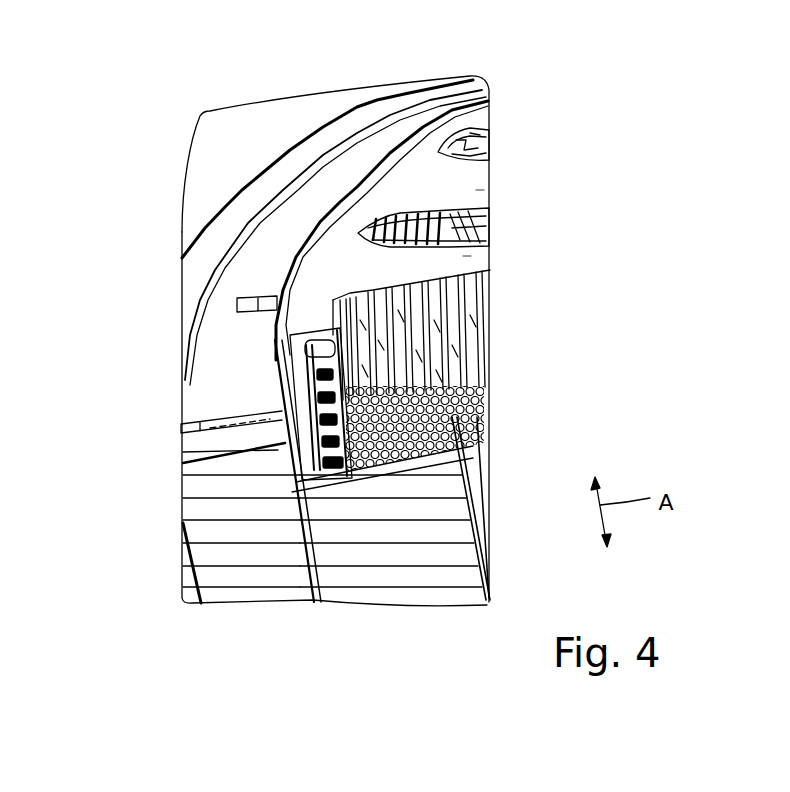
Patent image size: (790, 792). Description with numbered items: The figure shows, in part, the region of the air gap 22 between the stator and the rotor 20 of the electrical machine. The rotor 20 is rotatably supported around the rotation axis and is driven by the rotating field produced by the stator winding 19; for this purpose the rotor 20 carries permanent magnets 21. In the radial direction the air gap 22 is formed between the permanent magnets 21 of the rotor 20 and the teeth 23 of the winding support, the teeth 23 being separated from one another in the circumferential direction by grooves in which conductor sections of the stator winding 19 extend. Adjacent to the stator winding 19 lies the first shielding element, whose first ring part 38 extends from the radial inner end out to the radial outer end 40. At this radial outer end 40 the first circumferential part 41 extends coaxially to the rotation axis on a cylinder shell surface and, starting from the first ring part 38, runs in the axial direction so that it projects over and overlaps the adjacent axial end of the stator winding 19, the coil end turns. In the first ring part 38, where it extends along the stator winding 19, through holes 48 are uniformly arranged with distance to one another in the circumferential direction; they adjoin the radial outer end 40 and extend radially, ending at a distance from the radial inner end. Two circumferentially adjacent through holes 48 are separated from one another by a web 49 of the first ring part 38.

The stator winding 19 is at (473, 370).
The rotor 20 is at (226, 222).
The permanent magnets 21 is at (232, 592).
The air gap 22 is at (317, 577).
The teeth 23 is at (402, 600).
The first ring part 38 is at (466, 177).
The radial outer end 40 is at (367, 177).
The first circumferential part 41 is at (276, 358).
The through holes 48 is at (480, 133).
The web 49 is at (480, 193).